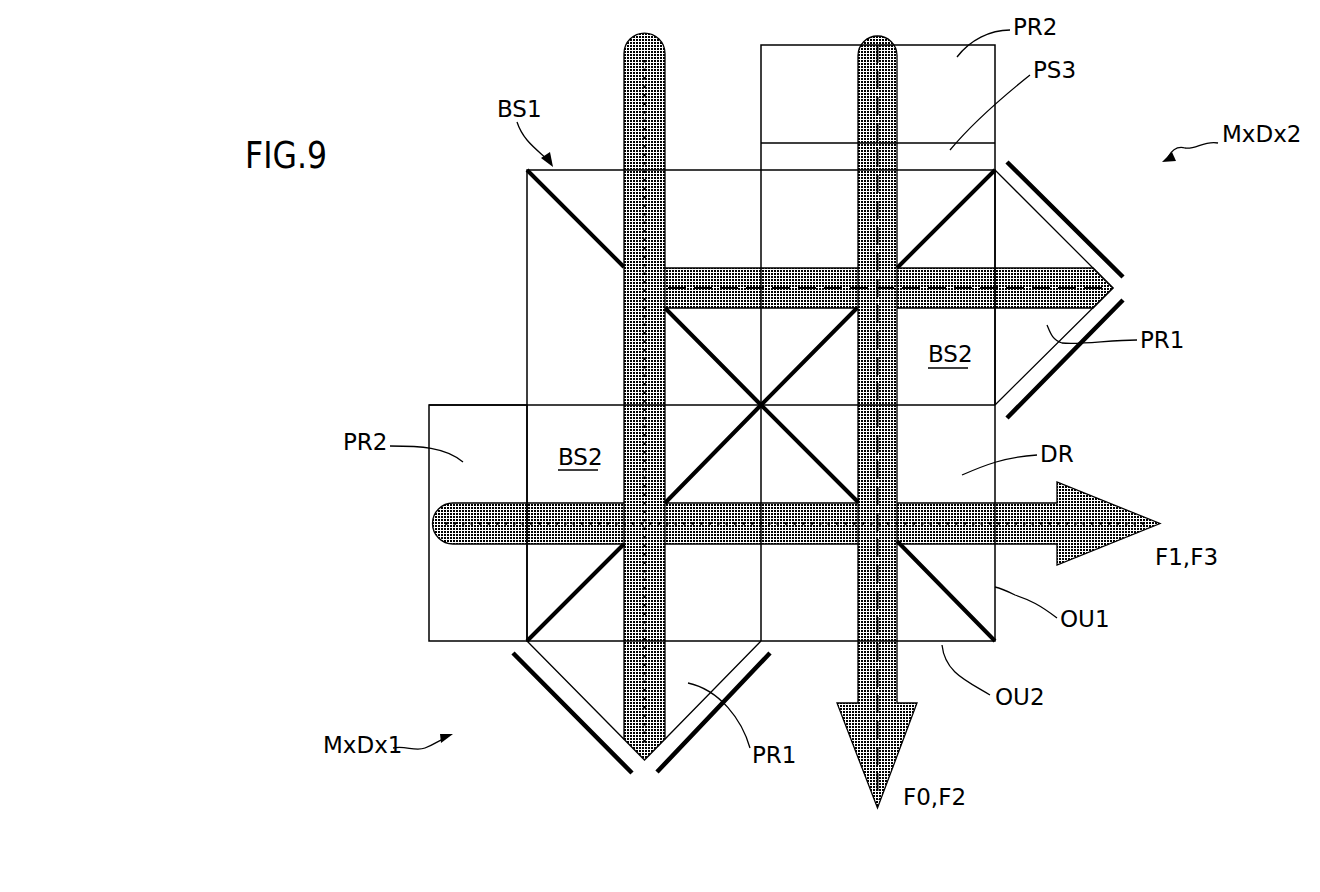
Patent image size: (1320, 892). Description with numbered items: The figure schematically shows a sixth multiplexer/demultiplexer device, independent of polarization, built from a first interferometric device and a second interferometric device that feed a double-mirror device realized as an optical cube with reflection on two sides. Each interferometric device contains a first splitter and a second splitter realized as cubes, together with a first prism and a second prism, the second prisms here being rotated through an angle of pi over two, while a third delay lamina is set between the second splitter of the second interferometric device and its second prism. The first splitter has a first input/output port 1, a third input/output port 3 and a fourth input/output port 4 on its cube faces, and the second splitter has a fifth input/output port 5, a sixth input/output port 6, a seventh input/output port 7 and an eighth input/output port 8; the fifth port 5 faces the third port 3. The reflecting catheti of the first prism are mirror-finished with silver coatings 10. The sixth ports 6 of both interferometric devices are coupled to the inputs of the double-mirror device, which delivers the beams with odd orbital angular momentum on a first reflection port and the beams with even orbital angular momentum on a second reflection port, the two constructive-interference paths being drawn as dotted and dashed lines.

The first input/output port 1 is at (702, 168).
The third input/output port 3 is at (557, 402).
The fourth input/output port 4 is at (760, 204).
The fifth input/output port 5 is at (762, 186).
The sixth input/output port 6 is at (762, 453).
The seventh input/output port 7 is at (995, 242).
The eighth input/output port 8 is at (992, 171).
The silver coatings 10 is at (1040, 188).